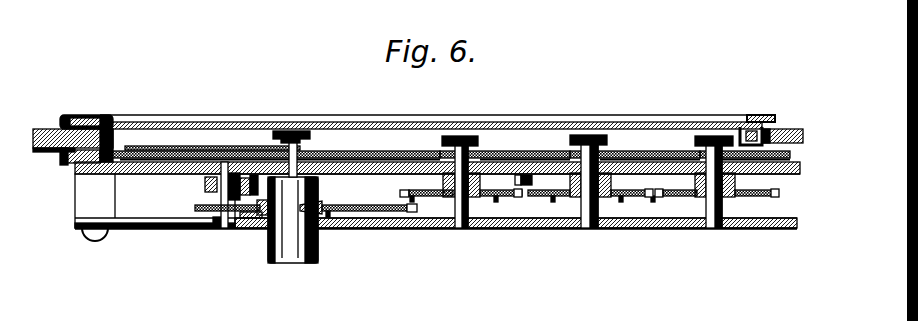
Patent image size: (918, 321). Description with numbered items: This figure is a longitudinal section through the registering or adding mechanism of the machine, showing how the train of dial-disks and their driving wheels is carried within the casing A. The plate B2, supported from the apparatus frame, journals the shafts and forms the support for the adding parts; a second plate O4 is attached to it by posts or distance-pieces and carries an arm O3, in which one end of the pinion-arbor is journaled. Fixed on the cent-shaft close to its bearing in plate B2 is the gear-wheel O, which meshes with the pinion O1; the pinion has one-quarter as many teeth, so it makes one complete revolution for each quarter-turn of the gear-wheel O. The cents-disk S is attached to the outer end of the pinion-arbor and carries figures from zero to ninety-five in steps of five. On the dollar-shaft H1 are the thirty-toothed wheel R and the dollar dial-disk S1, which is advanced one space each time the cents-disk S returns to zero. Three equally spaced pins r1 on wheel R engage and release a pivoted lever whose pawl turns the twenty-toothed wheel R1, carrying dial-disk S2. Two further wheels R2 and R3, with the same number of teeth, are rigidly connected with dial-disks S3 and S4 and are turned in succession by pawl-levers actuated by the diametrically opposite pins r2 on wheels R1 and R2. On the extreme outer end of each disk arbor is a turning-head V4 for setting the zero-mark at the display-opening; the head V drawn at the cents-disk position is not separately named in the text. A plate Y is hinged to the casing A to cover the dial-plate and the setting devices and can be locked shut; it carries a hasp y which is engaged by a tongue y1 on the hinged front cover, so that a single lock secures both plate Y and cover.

The casing A is at (48, 153).
The plate Y is at (360, 122).
The cents-disk S is at (172, 176).
The plate O4 is at (150, 229).
The plate B2 is at (178, 150).
The dollar dial-disk S1 is at (370, 147).
The dial-disk S2 is at (500, 152).
The dial-disk S3 is at (620, 152).
The dial-disk S4 is at (690, 152).
The arm O3 is at (214, 229).
The pinion O1 is at (243, 192).
The gear-wheel O is at (226, 229).
The shaft H1 is at (320, 256).
The valve post V is at (289, 131).
The turning-head V4 is at (712, 136).
The wheel R is at (362, 201).
The pins r1 is at (331, 210).
The wheel R1 is at (440, 196).
The pins r2 is at (634, 206).
The wheel R2 is at (606, 199).
The wheel R3 is at (680, 197).
The hasp y is at (744, 130).
The tongue y1 is at (758, 132).